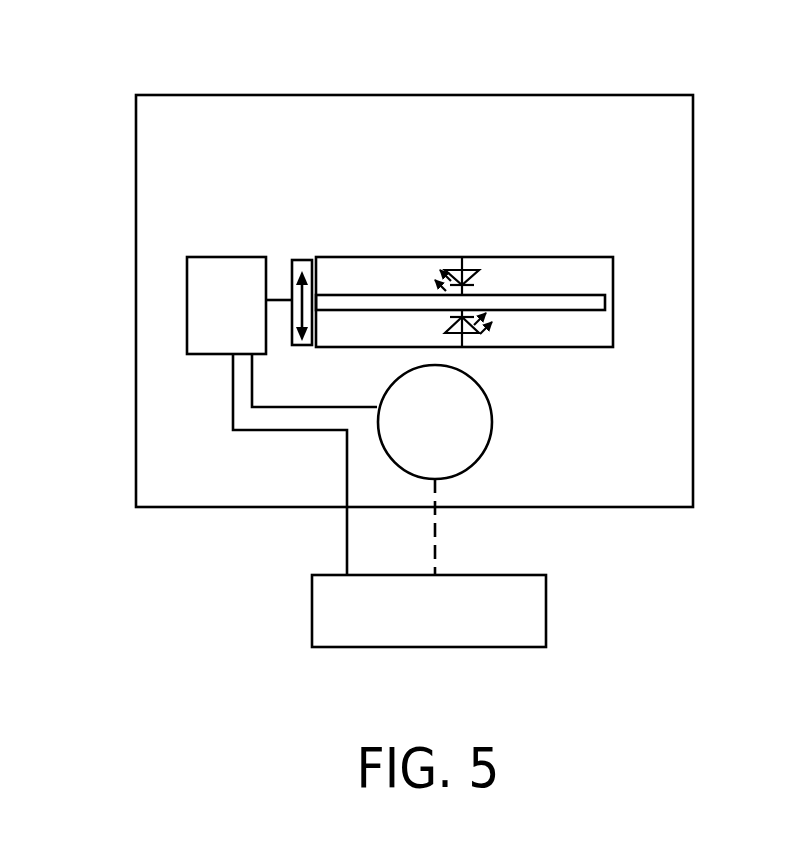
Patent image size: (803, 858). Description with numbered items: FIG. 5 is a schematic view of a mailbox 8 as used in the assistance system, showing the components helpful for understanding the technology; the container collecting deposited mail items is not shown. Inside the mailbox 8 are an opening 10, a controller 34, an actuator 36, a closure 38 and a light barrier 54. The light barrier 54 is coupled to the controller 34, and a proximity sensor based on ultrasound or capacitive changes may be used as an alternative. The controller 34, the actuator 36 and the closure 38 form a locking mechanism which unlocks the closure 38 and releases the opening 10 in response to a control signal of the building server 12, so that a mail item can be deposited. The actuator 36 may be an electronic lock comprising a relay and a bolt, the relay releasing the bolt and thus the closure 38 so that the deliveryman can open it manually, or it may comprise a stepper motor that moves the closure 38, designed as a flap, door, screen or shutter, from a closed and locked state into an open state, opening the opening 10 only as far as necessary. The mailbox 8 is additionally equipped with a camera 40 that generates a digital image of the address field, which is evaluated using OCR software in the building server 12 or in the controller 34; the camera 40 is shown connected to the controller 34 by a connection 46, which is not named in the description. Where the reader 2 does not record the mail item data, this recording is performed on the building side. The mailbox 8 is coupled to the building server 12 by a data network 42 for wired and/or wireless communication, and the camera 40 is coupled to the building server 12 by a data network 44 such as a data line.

The mailbox 8 is at (578, 98).
The controller 34 is at (188, 272).
The actuator 36 is at (292, 275).
The opening 10 is at (348, 257).
The light barrier 54 is at (490, 269).
The closure 38 is at (543, 297).
The controller-camera connection 46 is at (270, 407).
The camera 40 is at (493, 415).
The reader 2 is at (497, 438).
The data network 42 is at (347, 517).
The data network 44 is at (433, 548).
The building server 12 is at (312, 614).